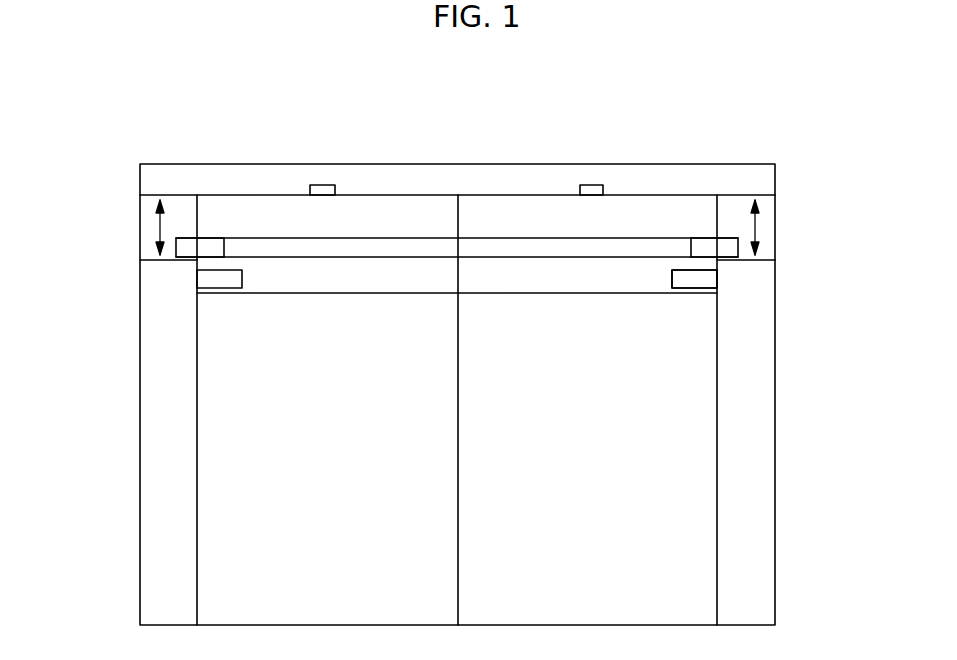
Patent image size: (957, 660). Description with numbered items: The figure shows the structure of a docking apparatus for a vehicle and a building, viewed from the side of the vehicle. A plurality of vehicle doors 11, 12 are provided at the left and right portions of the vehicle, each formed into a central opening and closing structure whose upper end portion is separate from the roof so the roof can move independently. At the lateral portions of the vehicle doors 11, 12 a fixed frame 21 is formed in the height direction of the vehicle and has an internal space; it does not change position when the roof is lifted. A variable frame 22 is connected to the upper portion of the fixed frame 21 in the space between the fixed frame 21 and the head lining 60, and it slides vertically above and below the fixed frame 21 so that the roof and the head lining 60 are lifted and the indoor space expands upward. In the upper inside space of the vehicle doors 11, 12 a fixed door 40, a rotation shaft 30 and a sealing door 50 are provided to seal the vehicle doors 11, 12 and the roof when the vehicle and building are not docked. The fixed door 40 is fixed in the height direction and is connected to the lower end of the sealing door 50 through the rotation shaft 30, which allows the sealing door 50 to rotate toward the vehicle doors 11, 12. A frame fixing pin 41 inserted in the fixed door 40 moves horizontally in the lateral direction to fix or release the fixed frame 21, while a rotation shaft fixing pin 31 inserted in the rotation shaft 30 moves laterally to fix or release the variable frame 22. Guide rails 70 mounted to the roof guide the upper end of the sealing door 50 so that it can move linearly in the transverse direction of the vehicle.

The vehicle door 11 is at (227, 457).
The vehicle door 12 is at (688, 456).
The fixed frame 21 is at (153, 566).
The variable frame 22 is at (148, 222).
The rotation shaft 30 is at (247, 248).
The rotation shaft fixing pin 31 is at (708, 245).
The fixed door 40 is at (324, 280).
The frame fixing pin 41 is at (700, 282).
The sealing door 50 is at (400, 225).
The head lining 60 is at (469, 183).
The guide rail 70 is at (320, 188).